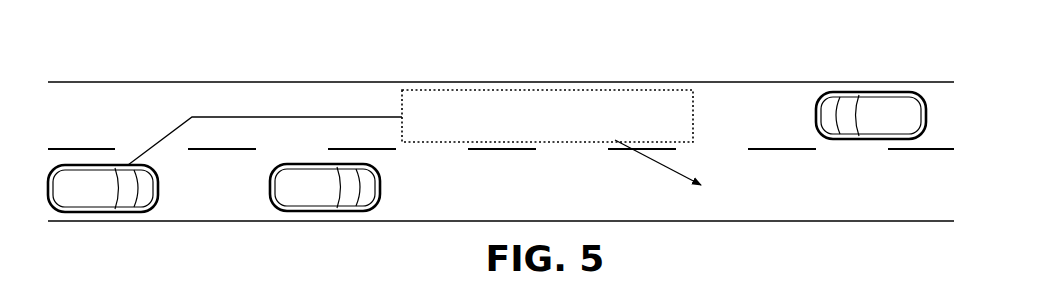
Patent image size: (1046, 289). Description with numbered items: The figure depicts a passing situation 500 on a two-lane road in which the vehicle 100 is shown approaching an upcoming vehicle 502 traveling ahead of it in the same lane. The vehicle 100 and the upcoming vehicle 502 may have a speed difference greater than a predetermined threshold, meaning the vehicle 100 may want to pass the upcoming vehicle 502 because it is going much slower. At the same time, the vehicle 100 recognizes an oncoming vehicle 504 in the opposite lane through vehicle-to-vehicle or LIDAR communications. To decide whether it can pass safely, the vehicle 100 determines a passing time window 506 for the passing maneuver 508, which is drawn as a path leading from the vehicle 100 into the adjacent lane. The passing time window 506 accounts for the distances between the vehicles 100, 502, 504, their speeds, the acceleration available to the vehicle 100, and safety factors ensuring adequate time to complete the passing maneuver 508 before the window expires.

The vehicle 100 is at (103, 216).
The passing situation 500 is at (653, 55).
The upcoming vehicle 502 is at (313, 213).
The oncoming vehicle 504 is at (878, 92).
The passing time window 506 is at (557, 90).
The passing maneuver 508 is at (282, 117).